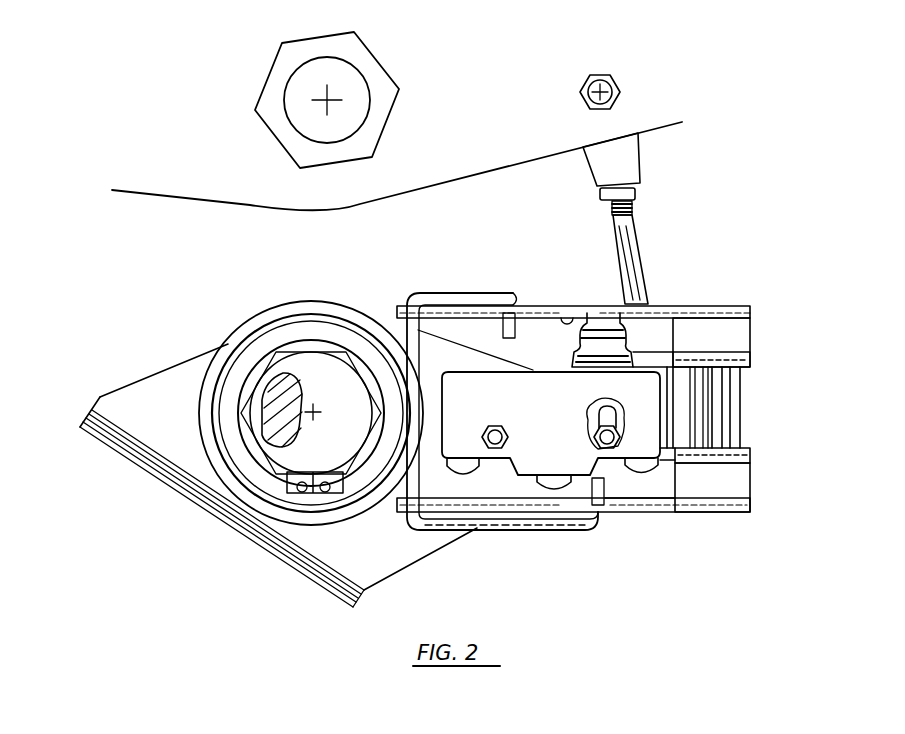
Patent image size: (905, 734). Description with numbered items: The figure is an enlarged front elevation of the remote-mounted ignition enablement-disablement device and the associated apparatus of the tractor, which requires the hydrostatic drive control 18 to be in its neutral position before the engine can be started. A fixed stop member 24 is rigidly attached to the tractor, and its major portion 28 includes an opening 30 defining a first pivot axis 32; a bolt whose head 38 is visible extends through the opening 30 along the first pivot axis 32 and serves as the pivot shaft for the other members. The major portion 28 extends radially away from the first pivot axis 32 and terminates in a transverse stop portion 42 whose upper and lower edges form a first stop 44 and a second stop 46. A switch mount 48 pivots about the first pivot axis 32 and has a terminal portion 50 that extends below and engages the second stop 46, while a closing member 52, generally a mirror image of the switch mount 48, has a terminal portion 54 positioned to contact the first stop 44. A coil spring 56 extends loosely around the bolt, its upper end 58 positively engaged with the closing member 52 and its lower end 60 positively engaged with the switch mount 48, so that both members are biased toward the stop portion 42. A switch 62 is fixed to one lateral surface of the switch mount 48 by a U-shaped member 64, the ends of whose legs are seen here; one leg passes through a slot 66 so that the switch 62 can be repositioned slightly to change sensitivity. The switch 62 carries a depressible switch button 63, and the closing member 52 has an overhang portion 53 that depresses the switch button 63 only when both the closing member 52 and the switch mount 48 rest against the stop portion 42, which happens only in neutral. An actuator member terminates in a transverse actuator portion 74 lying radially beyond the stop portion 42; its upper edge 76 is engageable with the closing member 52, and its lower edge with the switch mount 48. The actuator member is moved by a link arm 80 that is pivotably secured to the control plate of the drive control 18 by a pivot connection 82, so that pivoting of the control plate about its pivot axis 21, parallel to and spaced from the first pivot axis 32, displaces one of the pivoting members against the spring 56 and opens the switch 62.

The pivot axis 21 is at (332, 98).
The pivot connection 82 is at (608, 92).
The link arm 80 is at (635, 222).
The closing member 52 is at (663, 322).
The terminal portion 54 is at (745, 330).
The upper edge 76 is at (748, 357).
The first stop 44 is at (687, 364).
The stop portion 42 is at (697, 388).
The actuator portion 74 is at (740, 410).
The hydrostatic drive control 18 is at (740, 453).
The second stop 46 is at (690, 455).
The terminal portion 50 is at (745, 488).
The upper end 58 is at (460, 296).
The lower end 60 is at (533, 529).
The overhang portion 53 is at (566, 316).
The switch button 63 is at (598, 312).
The switch 62 is at (551, 438).
The U-shaped member 64 is at (489, 428).
The slot 66 is at (620, 404).
The coil spring 56 is at (247, 333).
The head 38 is at (313, 370).
The opening 30 is at (300, 390).
The first pivot axis 32 is at (315, 413).
The fixed stop member 24 is at (385, 562).
The major portion 28 is at (437, 542).
The switch mount 48 is at (630, 487).